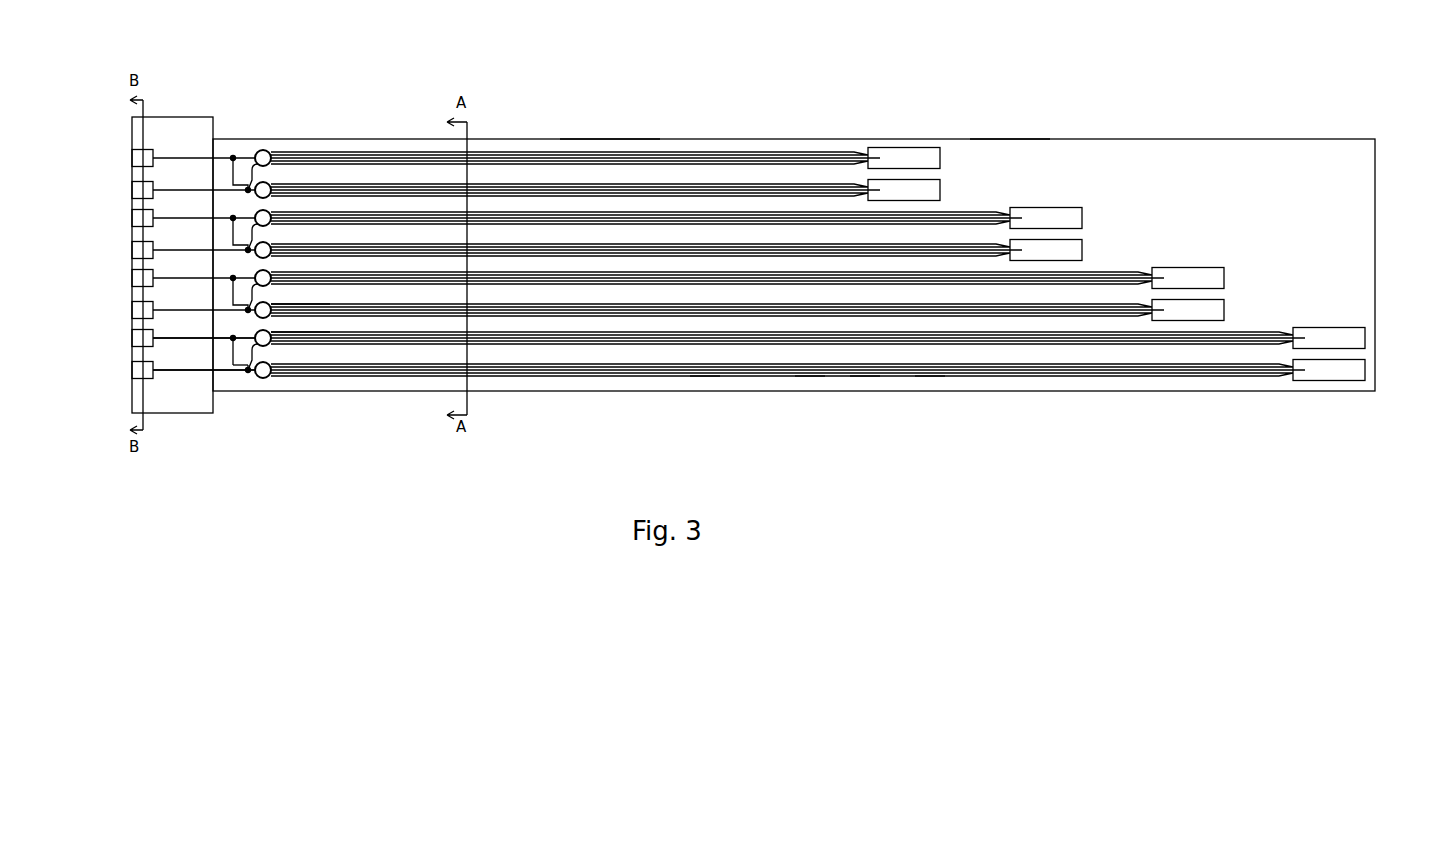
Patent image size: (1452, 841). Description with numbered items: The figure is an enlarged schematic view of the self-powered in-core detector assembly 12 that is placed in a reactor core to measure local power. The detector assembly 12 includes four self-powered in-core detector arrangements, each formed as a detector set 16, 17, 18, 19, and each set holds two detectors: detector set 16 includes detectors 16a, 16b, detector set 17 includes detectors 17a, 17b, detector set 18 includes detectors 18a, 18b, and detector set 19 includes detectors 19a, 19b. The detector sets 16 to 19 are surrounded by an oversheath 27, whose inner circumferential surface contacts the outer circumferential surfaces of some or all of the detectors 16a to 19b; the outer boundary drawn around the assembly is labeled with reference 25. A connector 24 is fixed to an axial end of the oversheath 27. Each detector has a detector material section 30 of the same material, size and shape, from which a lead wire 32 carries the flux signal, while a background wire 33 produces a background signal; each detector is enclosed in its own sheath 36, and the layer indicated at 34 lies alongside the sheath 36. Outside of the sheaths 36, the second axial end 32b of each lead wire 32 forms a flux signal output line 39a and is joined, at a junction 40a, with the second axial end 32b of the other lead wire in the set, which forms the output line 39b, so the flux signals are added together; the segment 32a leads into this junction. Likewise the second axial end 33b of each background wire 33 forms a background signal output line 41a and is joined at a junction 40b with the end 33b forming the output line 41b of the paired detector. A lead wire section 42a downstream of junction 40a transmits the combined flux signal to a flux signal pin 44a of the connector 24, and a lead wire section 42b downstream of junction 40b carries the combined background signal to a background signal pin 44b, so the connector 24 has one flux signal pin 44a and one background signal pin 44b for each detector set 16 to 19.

The self-powered in-core detector assembly 12 is at (1151, 114).
The connector 24 is at (184, 102).
The substrate edge 25 is at (612, 139).
The oversheath 27 is at (1010, 139).
The detector set 16 is at (859, 383).
The detector 16a is at (1012, 378).
The detector 16b is at (1048, 356).
The detector set 17 is at (790, 268).
The detector 17a is at (1203, 293).
The detector 17b is at (1195, 260).
The detector set 18 is at (723, 207).
The detector 18a is at (1084, 229).
The detector 18b is at (1076, 192).
The detector set 19 is at (653, 145).
The detector 19a is at (840, 143).
The detector 19b is at (800, 162).
The detector material section 30 is at (1310, 377).
The lead wire 32 is at (862, 378).
The first conductive layer segment 32a is at (231, 362).
The second axial end of lead wire 32b is at (273, 306).
The background wire 33 is at (808, 376).
The second axial end of background wire 33b is at (264, 359).
The insulating layer 34 is at (931, 378).
The sheath 36 is at (702, 378).
The flux signal output line 39a is at (239, 368).
The flux signal output line 39b is at (272, 334).
The junction 40a is at (244, 341).
The junction 40b is at (248, 376).
The background signal output line 41a is at (254, 378).
The background signal output line 41b is at (232, 335).
The lead wire section 42a is at (177, 342).
The lead wire section 42b is at (187, 374).
The flux signal pin 44a is at (131, 155).
The background signal pin 44b is at (131, 192).